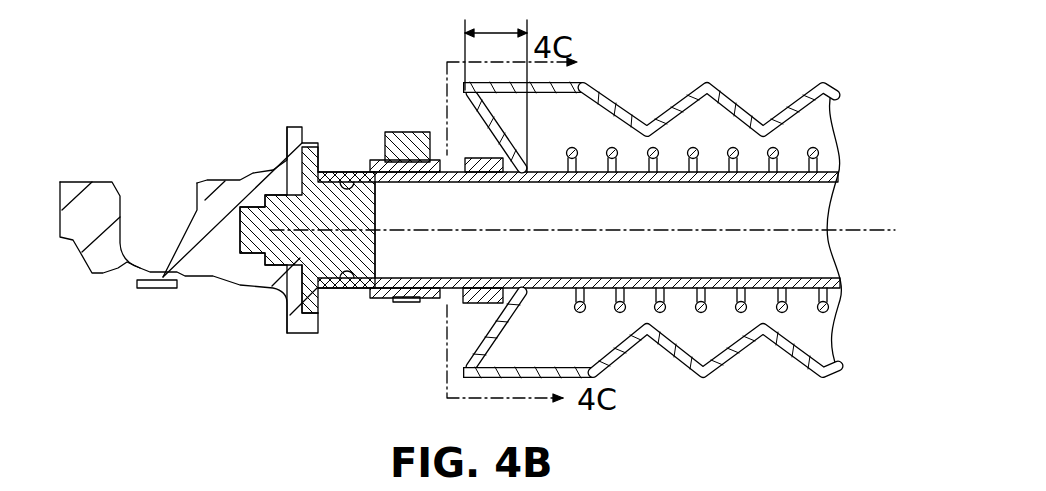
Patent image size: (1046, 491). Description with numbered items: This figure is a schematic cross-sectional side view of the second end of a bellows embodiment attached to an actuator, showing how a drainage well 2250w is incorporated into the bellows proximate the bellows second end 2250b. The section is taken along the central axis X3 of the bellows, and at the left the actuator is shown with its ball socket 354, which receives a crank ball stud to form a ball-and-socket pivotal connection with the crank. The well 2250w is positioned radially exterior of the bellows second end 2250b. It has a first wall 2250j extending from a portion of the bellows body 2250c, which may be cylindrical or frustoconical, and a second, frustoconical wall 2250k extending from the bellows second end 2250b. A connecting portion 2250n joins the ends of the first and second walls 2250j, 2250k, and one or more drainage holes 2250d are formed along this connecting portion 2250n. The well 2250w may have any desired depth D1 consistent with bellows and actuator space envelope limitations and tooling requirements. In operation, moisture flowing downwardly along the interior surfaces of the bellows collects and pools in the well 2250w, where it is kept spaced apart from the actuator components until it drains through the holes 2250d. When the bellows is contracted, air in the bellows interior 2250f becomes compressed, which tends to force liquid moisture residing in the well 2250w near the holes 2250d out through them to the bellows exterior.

The ball socket 354 is at (155, 223).
The bellows second end 2250b is at (378, 154).
The drainage holes 2250d is at (462, 89).
The drainage well 2250w is at (569, 122).
The bellows body 2250c is at (750, 97).
The second frustoconical wall 2250k is at (493, 321).
The connecting portion 2250n is at (467, 363).
The first wall 2250j is at (503, 380).
The bellows interior 2250f is at (712, 332).
The central axis X3 is at (872, 230).
The well depth D1 is at (496, 94).